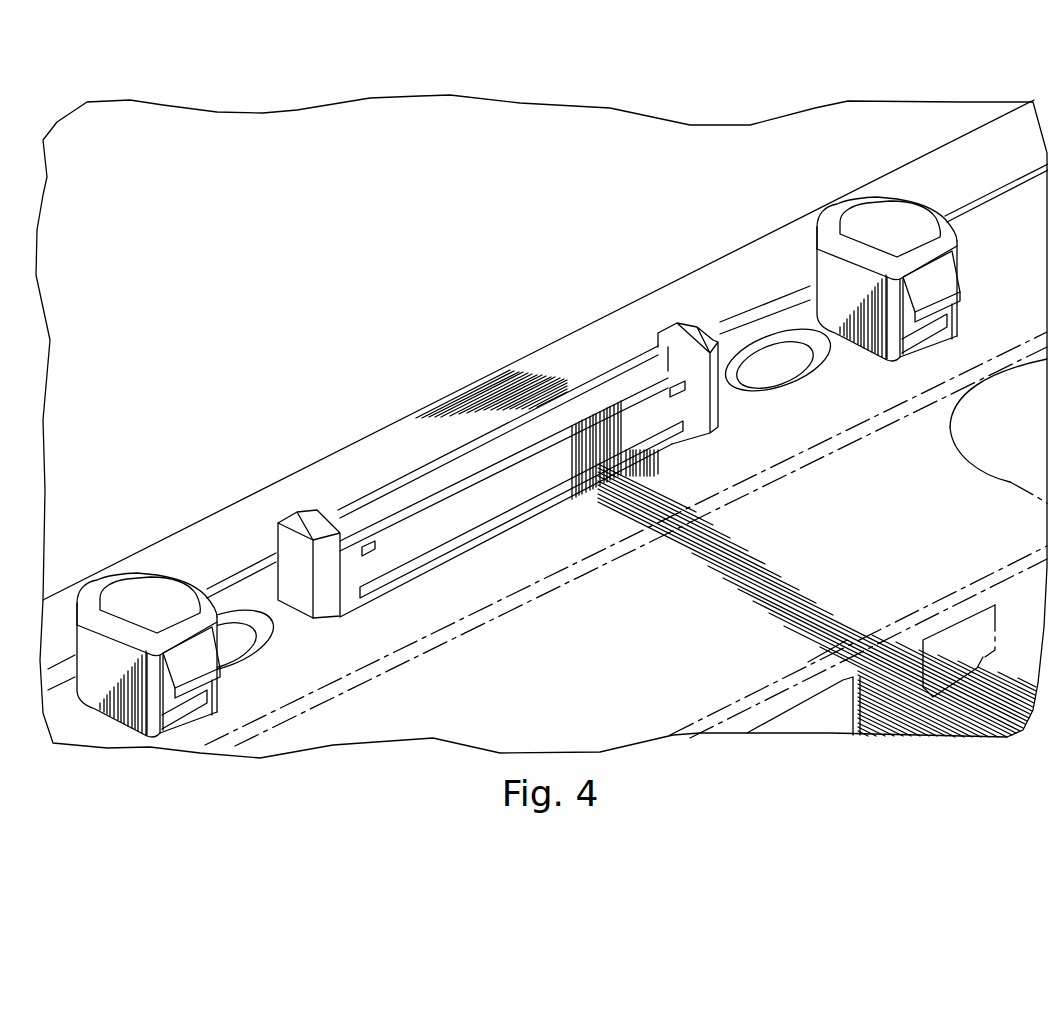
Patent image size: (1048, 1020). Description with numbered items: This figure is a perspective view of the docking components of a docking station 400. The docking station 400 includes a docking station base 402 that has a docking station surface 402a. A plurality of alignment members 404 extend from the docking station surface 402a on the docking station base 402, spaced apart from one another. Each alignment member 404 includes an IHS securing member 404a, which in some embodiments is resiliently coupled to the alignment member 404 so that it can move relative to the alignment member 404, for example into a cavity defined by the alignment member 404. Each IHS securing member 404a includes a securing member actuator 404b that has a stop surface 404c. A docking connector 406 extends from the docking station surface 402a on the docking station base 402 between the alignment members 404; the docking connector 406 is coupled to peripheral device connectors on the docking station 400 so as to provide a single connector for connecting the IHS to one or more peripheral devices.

The docking station 400 is at (393, 262).
The docking station base 402 is at (698, 268).
The docking station surface 402a is at (1010, 222).
The alignment member 404 is at (153, 562).
The IHS securing member 404a is at (173, 707).
The securing member actuator 404b is at (183, 663).
The stop surface 404c is at (217, 675).
The docking connector 406 is at (530, 482).